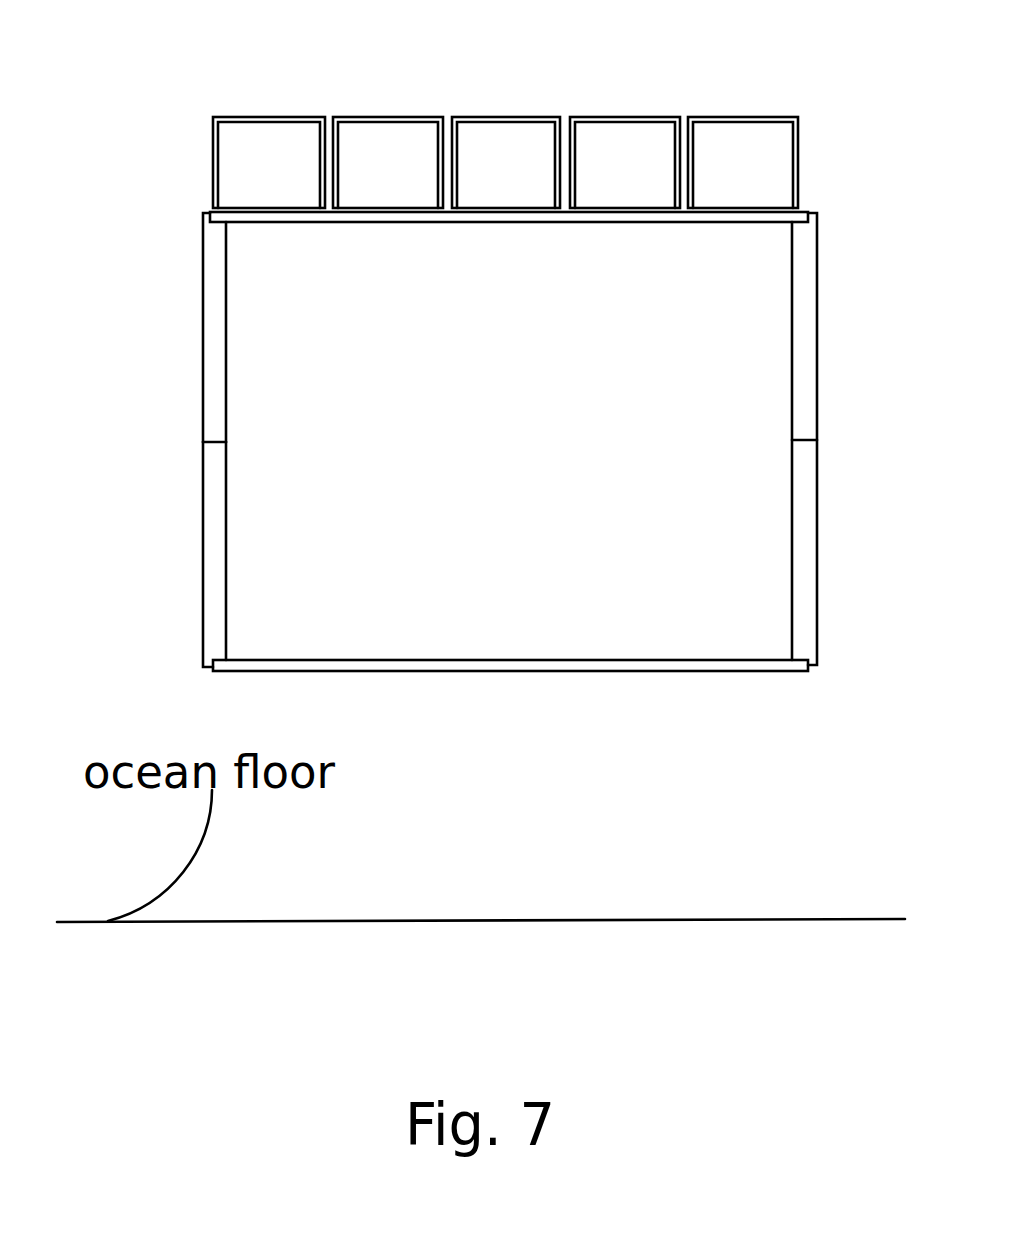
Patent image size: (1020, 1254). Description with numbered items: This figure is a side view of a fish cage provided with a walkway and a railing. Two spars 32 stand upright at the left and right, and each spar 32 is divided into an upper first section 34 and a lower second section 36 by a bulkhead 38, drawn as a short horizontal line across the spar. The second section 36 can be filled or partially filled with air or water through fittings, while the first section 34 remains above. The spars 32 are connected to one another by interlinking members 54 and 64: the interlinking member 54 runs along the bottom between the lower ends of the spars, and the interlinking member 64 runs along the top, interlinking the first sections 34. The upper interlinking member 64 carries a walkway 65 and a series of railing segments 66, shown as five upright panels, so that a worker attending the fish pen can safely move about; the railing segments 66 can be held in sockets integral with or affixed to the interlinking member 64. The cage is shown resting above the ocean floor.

The railing segments 66 is at (715, 117).
The walkway 65 is at (645, 206).
The interlinking members 64 is at (508, 222).
The first section 34 is at (202, 280).
The spars 32 is at (226, 360).
The bulkhead 38 is at (253, 428).
The second section 36 is at (202, 533).
The interlinking members 54 is at (562, 660).